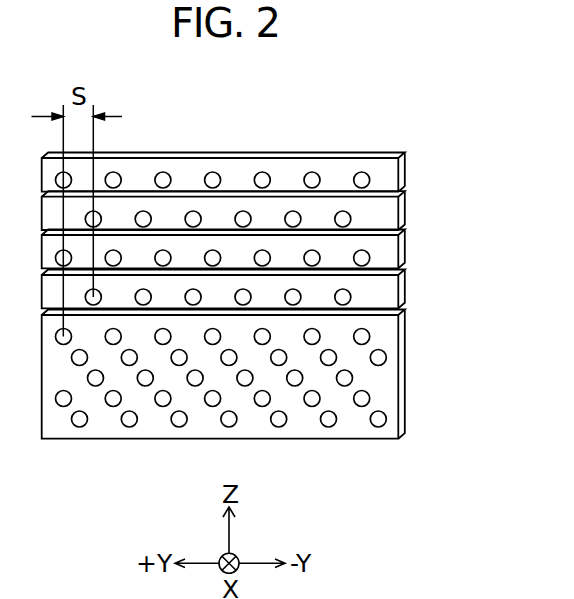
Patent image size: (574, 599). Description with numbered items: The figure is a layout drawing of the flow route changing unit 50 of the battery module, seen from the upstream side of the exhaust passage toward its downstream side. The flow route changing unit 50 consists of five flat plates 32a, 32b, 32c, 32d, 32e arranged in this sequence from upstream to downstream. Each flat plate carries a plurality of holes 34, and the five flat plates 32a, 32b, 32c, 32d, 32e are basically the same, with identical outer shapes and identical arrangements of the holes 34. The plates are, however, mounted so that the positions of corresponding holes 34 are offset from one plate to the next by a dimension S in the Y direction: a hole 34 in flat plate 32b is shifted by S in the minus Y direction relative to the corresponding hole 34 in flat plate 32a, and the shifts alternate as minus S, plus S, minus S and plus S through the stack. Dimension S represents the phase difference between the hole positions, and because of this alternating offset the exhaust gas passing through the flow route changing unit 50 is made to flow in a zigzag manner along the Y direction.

The flow route changing unit 50 is at (298, 321).
The flat plate 32a is at (262, 400).
The flat plate 32b is at (385, 293).
The flat plate 32c is at (385, 255).
The flat plate 32d is at (385, 214).
The flat plate 32e is at (385, 176).
The hole 34 is at (130, 422).